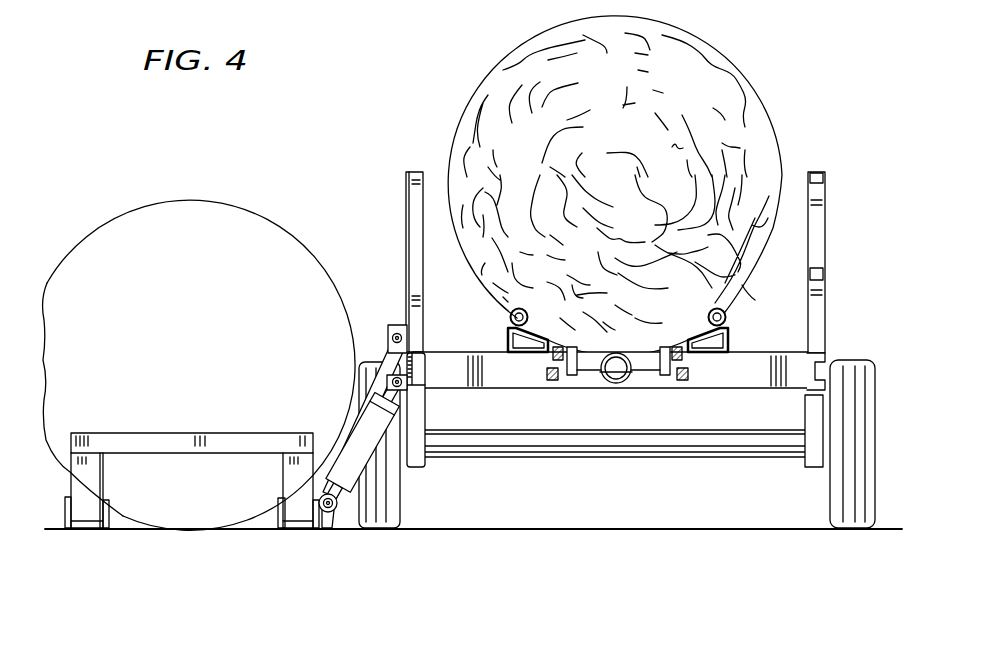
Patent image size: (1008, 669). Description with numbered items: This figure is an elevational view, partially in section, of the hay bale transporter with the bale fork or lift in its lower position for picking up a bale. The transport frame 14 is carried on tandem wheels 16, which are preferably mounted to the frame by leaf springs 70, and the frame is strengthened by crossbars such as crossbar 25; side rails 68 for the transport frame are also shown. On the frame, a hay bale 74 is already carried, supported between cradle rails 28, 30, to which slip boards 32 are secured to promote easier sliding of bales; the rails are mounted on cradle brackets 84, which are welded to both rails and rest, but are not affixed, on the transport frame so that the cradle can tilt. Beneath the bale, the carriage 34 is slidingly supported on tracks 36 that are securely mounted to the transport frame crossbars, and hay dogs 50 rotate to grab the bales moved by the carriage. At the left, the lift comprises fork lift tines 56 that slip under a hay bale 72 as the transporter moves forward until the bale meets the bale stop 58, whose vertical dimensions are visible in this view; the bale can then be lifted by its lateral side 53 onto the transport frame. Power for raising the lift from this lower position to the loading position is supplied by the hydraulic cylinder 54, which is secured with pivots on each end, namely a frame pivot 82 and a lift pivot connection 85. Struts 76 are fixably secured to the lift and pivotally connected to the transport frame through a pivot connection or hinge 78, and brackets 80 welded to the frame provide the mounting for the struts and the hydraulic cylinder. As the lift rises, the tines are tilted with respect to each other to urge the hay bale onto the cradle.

The transport frame 14 is at (793, 360).
The tandem wheels 16 is at (863, 372).
The crossbar 25 is at (697, 380).
The cradle rail 28 is at (521, 309).
The cradle rail 30 is at (712, 310).
The slip boards 32 is at (535, 347).
The carriage 34 is at (647, 363).
The tracks 36 is at (552, 385).
The hay dogs 50 is at (588, 370).
The bale lateral side 53 is at (96, 228).
The hydraulic cylinder 54 is at (357, 462).
The fork lift tines 56 is at (90, 532).
The bale stop 58 is at (180, 440).
The side rails 68 is at (822, 230).
The leaf springs 70 is at (812, 465).
The hay bale 72 is at (188, 222).
The hay bale 74 is at (705, 77).
The struts 76 is at (378, 356).
The pivot connection 78 is at (397, 330).
The brackets 80 is at (418, 366).
The frame pivot 82 is at (428, 398).
The cradle brackets 84 is at (508, 338).
The lift pivot connection 85 is at (335, 512).